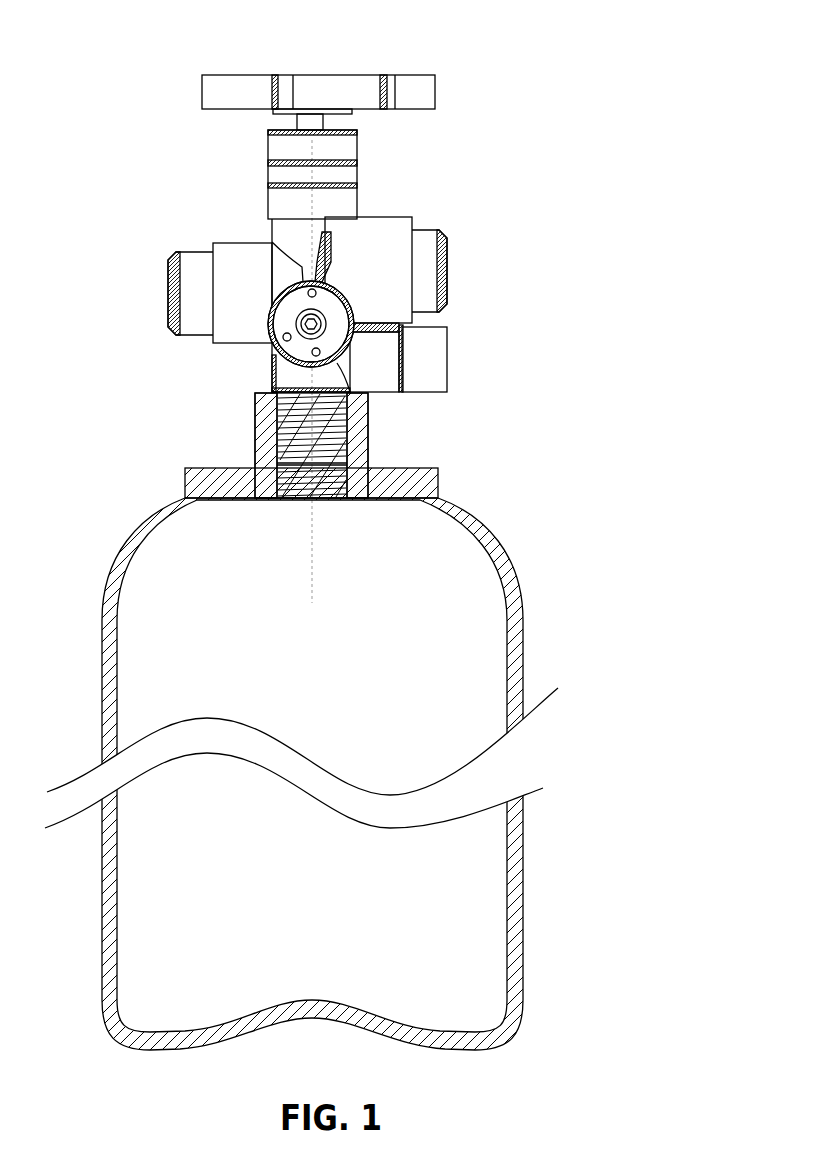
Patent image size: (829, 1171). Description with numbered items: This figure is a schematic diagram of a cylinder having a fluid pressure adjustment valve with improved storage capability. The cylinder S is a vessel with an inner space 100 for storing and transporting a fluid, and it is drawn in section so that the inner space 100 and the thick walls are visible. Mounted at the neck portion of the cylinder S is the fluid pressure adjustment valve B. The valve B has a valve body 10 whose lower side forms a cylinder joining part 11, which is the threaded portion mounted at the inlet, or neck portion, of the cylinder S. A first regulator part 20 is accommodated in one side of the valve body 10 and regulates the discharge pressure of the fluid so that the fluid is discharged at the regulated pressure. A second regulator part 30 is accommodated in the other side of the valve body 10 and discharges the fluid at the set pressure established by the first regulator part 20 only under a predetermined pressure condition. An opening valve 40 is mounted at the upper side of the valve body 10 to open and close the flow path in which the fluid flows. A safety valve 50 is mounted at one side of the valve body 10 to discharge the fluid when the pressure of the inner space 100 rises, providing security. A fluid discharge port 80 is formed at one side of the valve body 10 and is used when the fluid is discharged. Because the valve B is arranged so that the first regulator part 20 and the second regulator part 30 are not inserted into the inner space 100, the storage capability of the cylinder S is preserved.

The valve body 10 is at (357, 225).
The cylinder joining part 11 is at (277, 423).
The first regulator part 20 is at (193, 298).
The second regulator part 30 is at (442, 258).
The opening valve 40 is at (412, 88).
The safety valve 50 is at (433, 388).
The fluid discharge port 80 is at (283, 350).
The inner space 100 is at (433, 710).
The cylinder S is at (522, 705).
The fluid pressure adjustment valve B is at (140, 163).